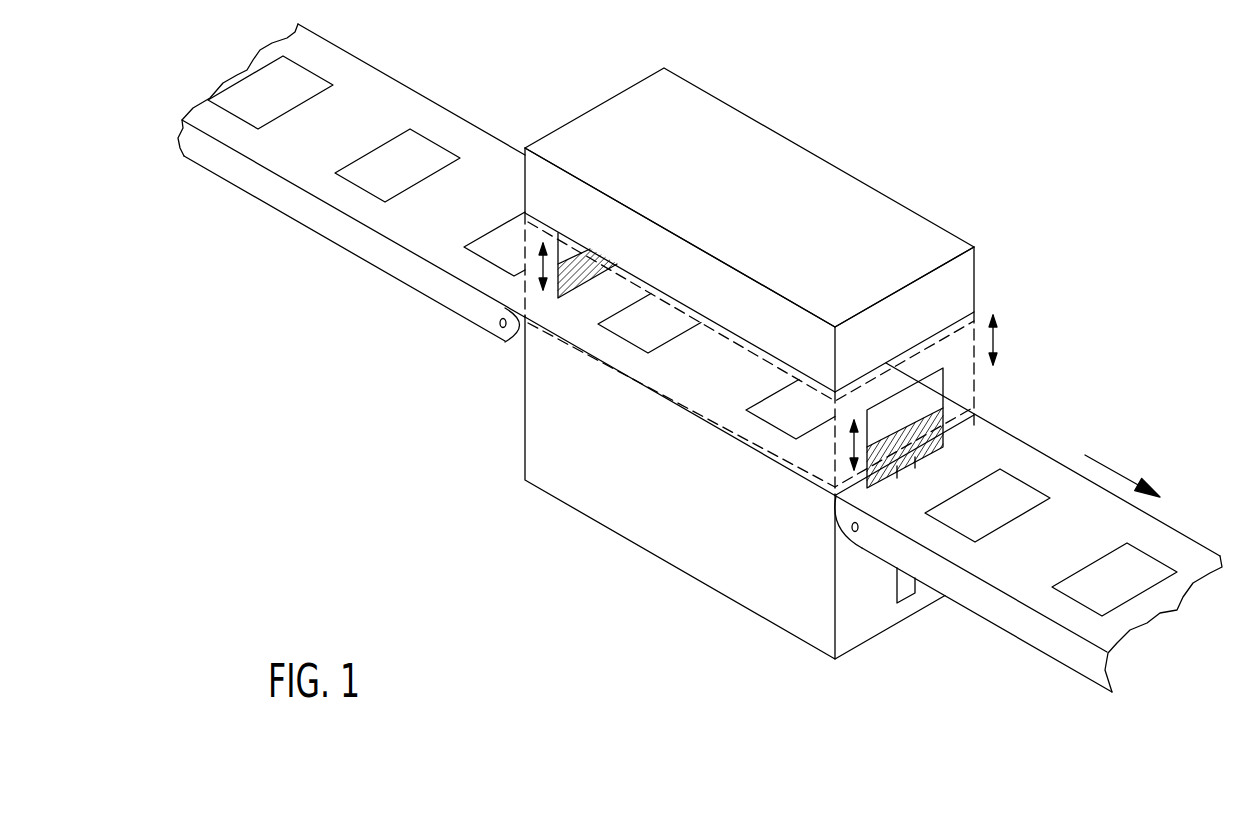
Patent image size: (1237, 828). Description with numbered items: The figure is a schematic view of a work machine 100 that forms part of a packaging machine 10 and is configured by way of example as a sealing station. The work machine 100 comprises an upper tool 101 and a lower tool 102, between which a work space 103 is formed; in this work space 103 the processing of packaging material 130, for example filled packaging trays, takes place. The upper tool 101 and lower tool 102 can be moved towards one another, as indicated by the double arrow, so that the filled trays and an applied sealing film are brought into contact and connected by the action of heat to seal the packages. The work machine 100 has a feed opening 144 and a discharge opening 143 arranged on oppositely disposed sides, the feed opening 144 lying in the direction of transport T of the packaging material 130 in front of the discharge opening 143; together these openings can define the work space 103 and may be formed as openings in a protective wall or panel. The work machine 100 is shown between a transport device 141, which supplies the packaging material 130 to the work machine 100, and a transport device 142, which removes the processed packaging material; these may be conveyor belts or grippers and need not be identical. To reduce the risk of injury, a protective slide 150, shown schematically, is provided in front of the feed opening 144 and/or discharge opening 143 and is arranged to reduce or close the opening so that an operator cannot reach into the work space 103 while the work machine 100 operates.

The packaging machine 10 is at (1130, 392).
The work machine 100 is at (981, 192).
The upper tool 101 is at (967, 268).
The lower tool 102 is at (881, 623).
The work space 103 is at (967, 375).
The packaging material 130 is at (473, 309).
The transport device 141 is at (351, 182).
The transport device 142 is at (1028, 543).
The discharge opening 143 is at (814, 527).
The feed opening 144 is at (687, 336).
The protective slide 150 is at (963, 405).